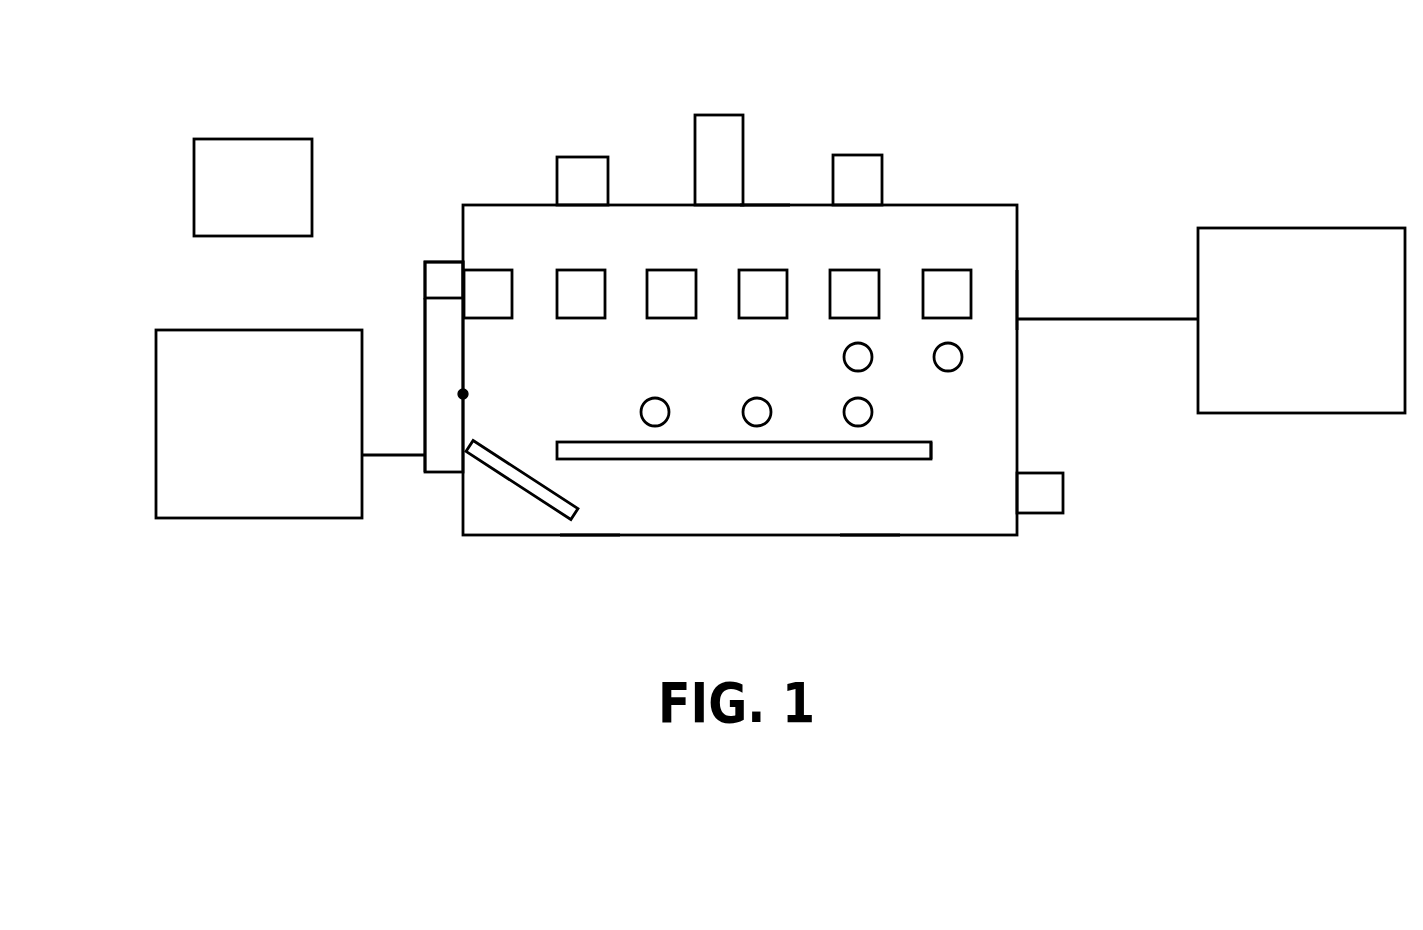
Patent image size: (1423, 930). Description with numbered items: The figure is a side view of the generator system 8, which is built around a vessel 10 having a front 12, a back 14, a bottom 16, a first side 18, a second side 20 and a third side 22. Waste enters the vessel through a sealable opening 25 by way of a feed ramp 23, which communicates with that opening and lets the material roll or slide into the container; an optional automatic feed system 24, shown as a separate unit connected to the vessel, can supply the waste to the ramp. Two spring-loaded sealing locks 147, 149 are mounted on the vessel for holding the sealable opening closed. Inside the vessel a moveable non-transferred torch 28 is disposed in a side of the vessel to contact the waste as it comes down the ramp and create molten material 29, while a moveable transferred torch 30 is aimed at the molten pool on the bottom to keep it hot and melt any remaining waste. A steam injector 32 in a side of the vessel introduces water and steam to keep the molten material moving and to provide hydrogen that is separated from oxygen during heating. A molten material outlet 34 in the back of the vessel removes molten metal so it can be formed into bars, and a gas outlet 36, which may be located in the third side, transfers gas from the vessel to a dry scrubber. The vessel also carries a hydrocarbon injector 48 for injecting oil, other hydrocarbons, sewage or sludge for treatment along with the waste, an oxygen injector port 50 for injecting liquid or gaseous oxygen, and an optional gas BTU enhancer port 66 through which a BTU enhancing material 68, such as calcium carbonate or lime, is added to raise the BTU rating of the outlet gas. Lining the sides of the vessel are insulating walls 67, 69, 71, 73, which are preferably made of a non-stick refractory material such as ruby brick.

The generator system 8 is at (606, 119).
The vessel 10 is at (740, 305).
The front 12 is at (774, 140).
The back 14 is at (1107, 295).
The bottom 16 is at (884, 561).
The first side 18 is at (744, 515).
The second side 20 is at (603, 561).
The third side 22 is at (417, 356).
The feed ramp 23 is at (522, 514).
The automatic feed system 24 is at (290, 459).
The sealable opening 25 is at (417, 236).
The moveable non-transferred torch 28 is at (401, 155).
The molten material 29 is at (970, 515).
The moveable transferred torch 30 is at (872, 140).
The steam injector 32 is at (678, 493).
The molten material outlet 34 is at (1060, 530).
The gas outlet 36 is at (710, 140).
The hydrocarbon injector 48 is at (974, 435).
The oxygen injector port 50 is at (988, 196).
The gas BTU enhancer port 66 is at (801, 493).
The insulating wall 67 is at (472, 246).
The BTU enhancing material 68 is at (1019, 386).
The insulating wall 69 is at (657, 196).
The insulating wall 71 is at (798, 196).
The insulating wall 73 is at (964, 223).
The spring-loaded sealing lock 147 is at (457, 488).
The spring-loaded sealing lock 149 is at (392, 385).